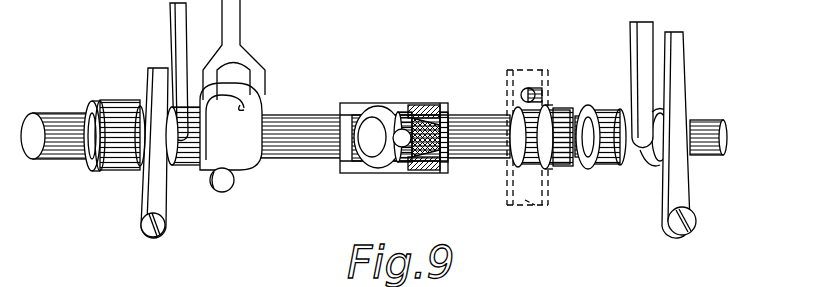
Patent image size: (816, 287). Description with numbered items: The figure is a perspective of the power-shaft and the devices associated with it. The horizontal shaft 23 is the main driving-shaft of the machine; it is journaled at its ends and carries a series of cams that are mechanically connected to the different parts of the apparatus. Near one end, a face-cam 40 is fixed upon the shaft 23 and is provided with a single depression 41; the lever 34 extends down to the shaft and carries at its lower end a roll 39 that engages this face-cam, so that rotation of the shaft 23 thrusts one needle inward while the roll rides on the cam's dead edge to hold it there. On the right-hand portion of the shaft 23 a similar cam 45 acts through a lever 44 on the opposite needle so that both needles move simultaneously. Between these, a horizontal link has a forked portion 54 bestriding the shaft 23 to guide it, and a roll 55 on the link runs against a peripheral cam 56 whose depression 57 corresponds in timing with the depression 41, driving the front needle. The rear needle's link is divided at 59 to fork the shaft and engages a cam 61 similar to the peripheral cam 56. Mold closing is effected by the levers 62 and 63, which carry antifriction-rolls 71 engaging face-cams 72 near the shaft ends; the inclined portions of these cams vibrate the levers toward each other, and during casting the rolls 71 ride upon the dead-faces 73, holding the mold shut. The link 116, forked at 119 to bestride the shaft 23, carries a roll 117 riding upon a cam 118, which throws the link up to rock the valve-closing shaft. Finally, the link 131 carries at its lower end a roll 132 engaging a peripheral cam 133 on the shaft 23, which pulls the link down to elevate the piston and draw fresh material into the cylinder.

The horizontal shaft 23 is at (476, 145).
The lever 34 is at (178, 45).
The roll 39 is at (172, 128).
The face-cam 40 is at (170, 178).
The depression 41 is at (142, 214).
The lever 44 is at (640, 86).
The cam 45 is at (622, 166).
The forked portion 54 is at (345, 105).
The roll 55 is at (405, 168).
The peripheral cam 56 is at (380, 164).
The depression 57 is at (412, 118).
The divided front end 59 is at (436, 106).
The cam 61 is at (430, 165).
The lever 62 is at (167, 213).
The lever 63 is at (672, 208).
The antifriction-roll 71 is at (136, 170).
The face-cam 72 is at (110, 104).
The dead-face 73 is at (668, 112).
The link 116 is at (528, 70).
The roll 117 is at (538, 98).
The cam 118 is at (555, 165).
The fork 119 is at (530, 204).
The link 131 is at (232, 32).
The roll 132 is at (226, 192).
The peripheral cam 133 is at (243, 110).